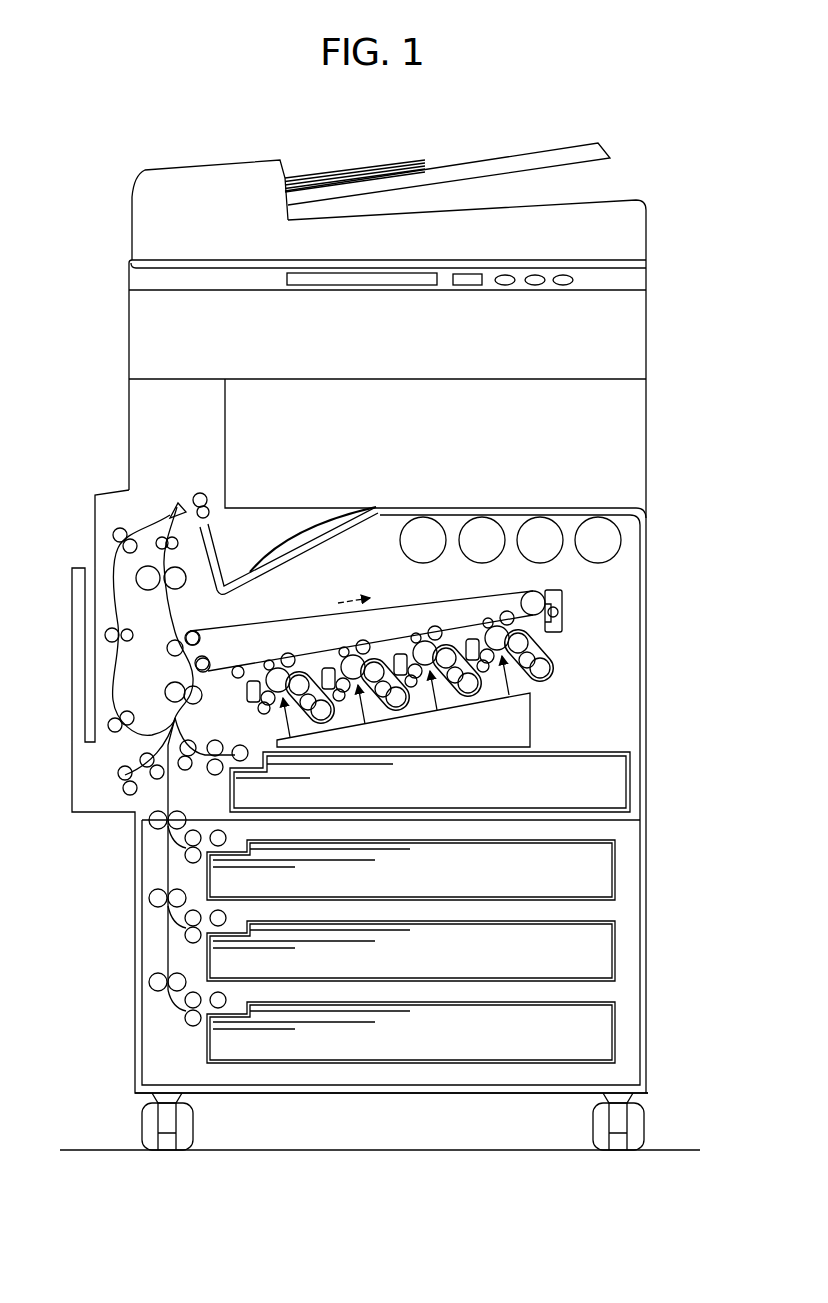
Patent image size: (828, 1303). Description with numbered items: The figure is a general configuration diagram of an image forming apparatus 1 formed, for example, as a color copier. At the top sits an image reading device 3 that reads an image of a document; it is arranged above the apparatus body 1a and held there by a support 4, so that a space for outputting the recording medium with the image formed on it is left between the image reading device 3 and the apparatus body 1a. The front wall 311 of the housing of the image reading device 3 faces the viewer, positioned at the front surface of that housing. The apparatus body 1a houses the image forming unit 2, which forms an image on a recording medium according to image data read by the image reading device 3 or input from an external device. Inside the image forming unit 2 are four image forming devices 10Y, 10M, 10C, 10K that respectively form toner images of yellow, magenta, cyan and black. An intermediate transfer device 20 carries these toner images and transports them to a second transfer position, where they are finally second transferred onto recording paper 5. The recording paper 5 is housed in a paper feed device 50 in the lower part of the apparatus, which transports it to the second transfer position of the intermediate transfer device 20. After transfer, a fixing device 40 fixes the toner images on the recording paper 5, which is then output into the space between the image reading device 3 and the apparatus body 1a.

The image forming apparatus 1 is at (526, 133).
The apparatus body 1a is at (652, 548).
The image forming unit 2 is at (394, 637).
The image reading device 3 is at (126, 333).
The front wall 311 is at (618, 341).
The support 4 is at (143, 438).
The intermediate transfer device 20 is at (311, 612).
The fixing device 40 is at (136, 588).
The image forming device 10K is at (295, 713).
The image forming device 10C is at (370, 699).
The image forming device 10M is at (442, 691).
The image forming device 10Y is at (543, 694).
The recording paper 5 is at (610, 752).
The paper feed device 50 is at (620, 866).